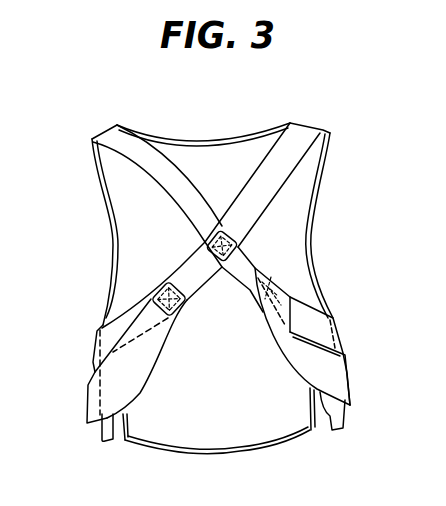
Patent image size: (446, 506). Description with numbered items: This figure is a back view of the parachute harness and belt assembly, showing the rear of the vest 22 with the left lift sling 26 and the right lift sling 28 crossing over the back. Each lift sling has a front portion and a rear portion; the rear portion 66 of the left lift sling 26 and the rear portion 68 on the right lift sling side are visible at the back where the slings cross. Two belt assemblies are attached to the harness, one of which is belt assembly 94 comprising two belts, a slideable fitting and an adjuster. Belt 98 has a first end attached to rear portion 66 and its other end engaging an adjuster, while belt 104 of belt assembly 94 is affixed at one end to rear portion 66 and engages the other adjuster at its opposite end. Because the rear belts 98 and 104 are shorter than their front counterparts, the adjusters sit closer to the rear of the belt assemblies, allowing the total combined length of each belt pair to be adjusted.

The vest 22 is at (234, 152).
The left lift sling 26 is at (128, 150).
The right lift sling 28 is at (279, 171).
The rear portion 68 is at (248, 266).
The rear portion 66 is at (115, 337).
The belt 98 is at (144, 365).
The belt 104 is at (296, 355).
The belt assembly 94 is at (355, 381).